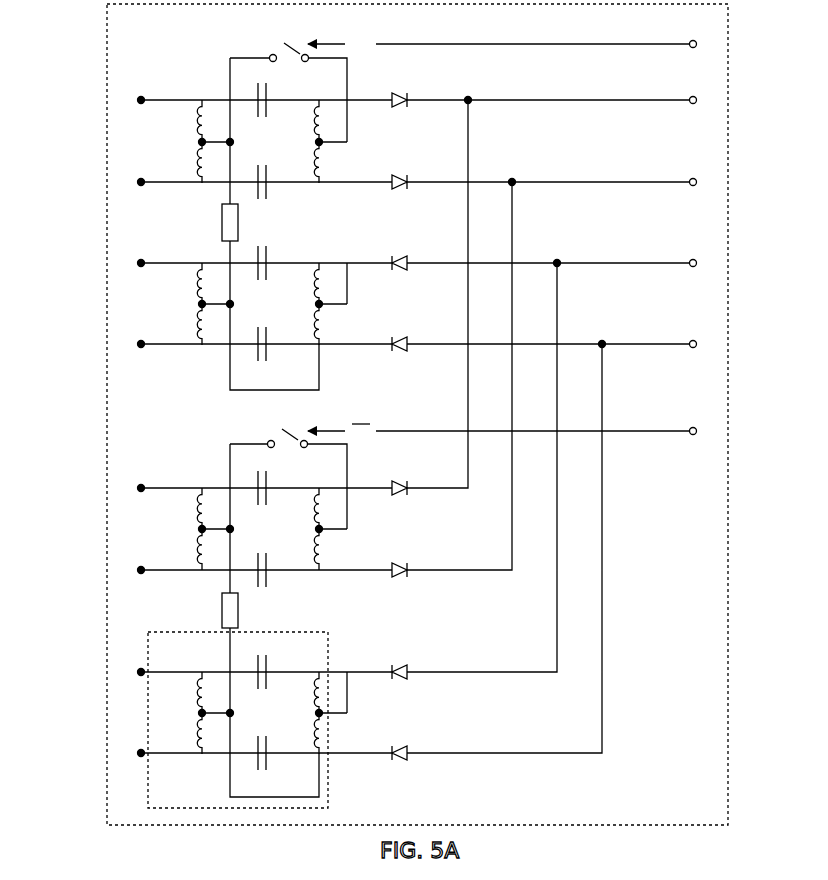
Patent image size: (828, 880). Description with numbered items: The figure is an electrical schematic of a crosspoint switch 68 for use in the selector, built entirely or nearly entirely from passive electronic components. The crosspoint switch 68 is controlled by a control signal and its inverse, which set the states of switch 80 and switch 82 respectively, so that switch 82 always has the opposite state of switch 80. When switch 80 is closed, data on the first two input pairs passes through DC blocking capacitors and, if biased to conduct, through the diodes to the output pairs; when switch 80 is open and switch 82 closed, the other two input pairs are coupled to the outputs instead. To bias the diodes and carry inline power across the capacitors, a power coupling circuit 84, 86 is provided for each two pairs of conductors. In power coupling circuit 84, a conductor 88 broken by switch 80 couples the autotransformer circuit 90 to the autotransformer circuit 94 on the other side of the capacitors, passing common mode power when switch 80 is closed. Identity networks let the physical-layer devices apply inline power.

The crosspoint switch 68 is at (728, 593).
The switch 80 is at (268, 42).
The switch 82 is at (268, 430).
The power coupling circuit 84 is at (360, 76).
The power coupling circuit 86 is at (360, 464).
The conductor 88 is at (230, 78).
The autotransformer circuit 90 is at (128, 128).
The autotransformer circuit 94 is at (360, 146).